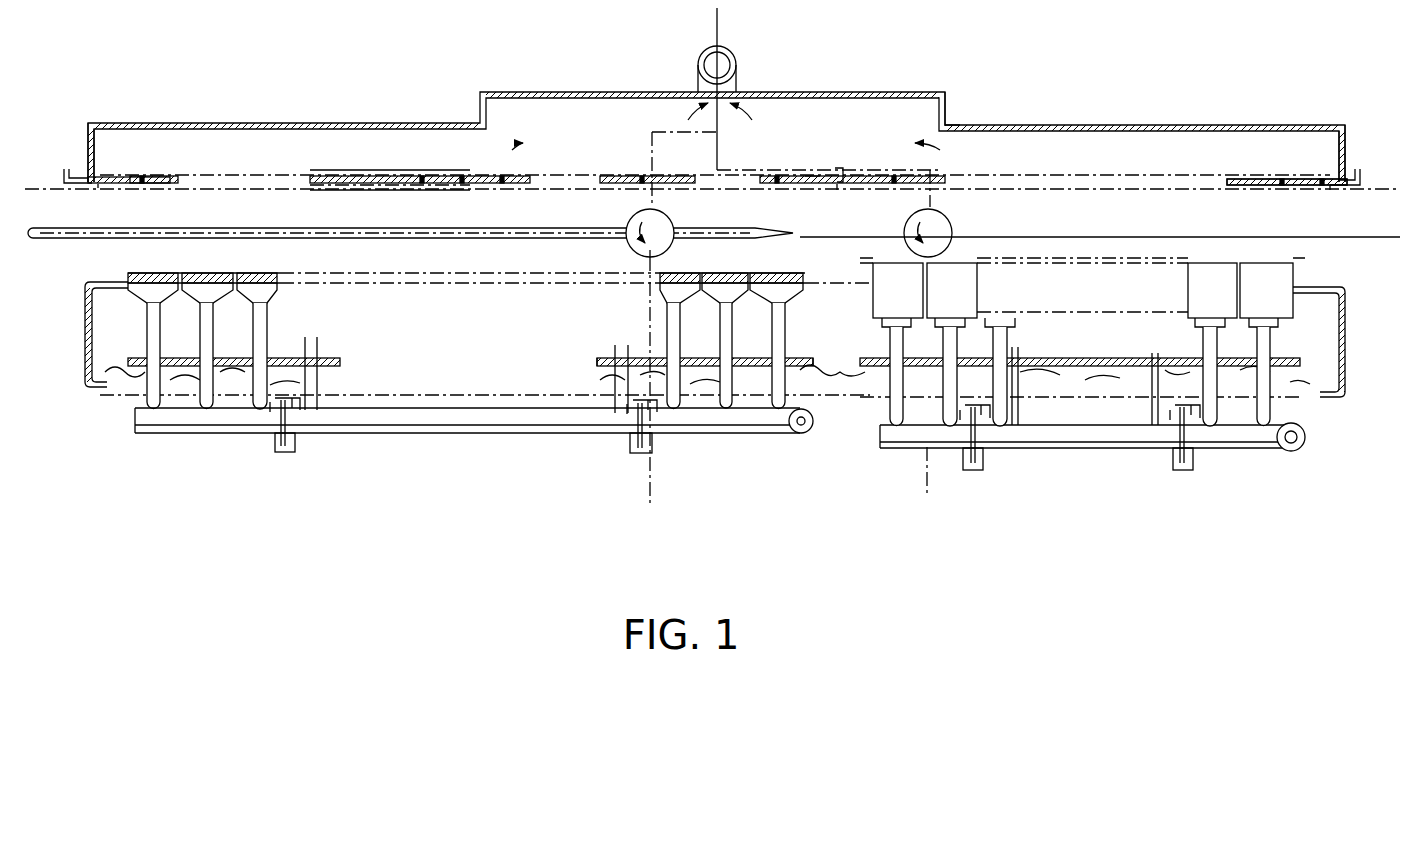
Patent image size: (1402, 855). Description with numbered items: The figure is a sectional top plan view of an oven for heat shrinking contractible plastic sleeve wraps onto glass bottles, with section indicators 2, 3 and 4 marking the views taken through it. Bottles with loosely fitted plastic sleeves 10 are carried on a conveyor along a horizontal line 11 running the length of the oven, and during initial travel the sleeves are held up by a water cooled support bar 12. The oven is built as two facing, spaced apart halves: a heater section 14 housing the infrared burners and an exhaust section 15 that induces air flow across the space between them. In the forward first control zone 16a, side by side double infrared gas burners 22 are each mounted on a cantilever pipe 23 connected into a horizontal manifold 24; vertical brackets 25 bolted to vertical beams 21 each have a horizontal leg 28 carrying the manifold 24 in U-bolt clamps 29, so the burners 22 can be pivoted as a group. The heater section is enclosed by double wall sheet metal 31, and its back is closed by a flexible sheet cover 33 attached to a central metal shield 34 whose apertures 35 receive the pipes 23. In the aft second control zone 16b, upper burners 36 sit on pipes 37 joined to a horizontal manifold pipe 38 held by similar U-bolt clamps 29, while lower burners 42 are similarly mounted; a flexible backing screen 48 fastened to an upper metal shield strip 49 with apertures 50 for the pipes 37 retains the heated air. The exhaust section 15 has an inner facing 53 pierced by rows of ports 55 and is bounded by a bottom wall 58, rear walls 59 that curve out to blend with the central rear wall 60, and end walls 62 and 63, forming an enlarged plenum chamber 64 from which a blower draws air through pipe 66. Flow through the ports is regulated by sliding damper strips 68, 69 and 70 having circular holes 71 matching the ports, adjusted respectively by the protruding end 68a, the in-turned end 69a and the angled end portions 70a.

The section line 2- 2 is at (700, 25).
The section line 3- 3 is at (700, 47).
The section line 4- 4 is at (48, 207).
The bottles with plastic sleeves 10 is at (660, 222).
The conveyor path line 11 is at (1112, 235).
The support bar 12 is at (338, 226).
The heater section 14 is at (1352, 370).
The exhaust section 15 is at (719, 139).
The first control zone 16a is at (569, 208).
The second control zone 16b is at (1067, 213).
The vertical beams 21 is at (300, 404).
The double infrared gas burners 22 is at (193, 282).
The cantilever pipe 23 is at (202, 342).
The horizontal manifold 24 is at (448, 426).
The vertical brackets 25 is at (273, 408).
The horizontal leg 28 is at (283, 454).
The U-bolt clamps 29 is at (278, 426).
The double wall sheet metal 31 is at (84, 333).
The flexible sheet cover 33 is at (598, 382).
The central metal shield 34 is at (650, 296).
The apertures 35 is at (681, 360).
The upper burners 36 is at (1083, 295).
The pipe 37 is at (893, 406).
The horizontal manifold pipe 38 is at (1087, 438).
The lower burners 42 is at (993, 257).
The flexible backing screen 48 is at (1180, 378).
The upper metal shield strip 49 is at (1144, 359).
The apertures 50 is at (1014, 358).
The inner facing 53 is at (98, 186).
The ports 55 is at (142, 190).
The bottom wall 58 is at (390, 164).
The rear walls 59 is at (306, 122).
The rear wall 60 is at (636, 91).
The end wall 62 is at (96, 162).
The end wall 63 is at (1262, 162).
The plenum chamber 64 is at (843, 128).
The pipe 66 is at (700, 64).
The damper strips 68 is at (101, 181).
The end protruding portion 68a is at (67, 170).
The central damper means 69 is at (813, 176).
The in-turned end 69a is at (844, 170).
The right hand damper means 70 is at (1240, 169).
The angled end portions 70a is at (1357, 170).
The circular holes 71 is at (150, 178).